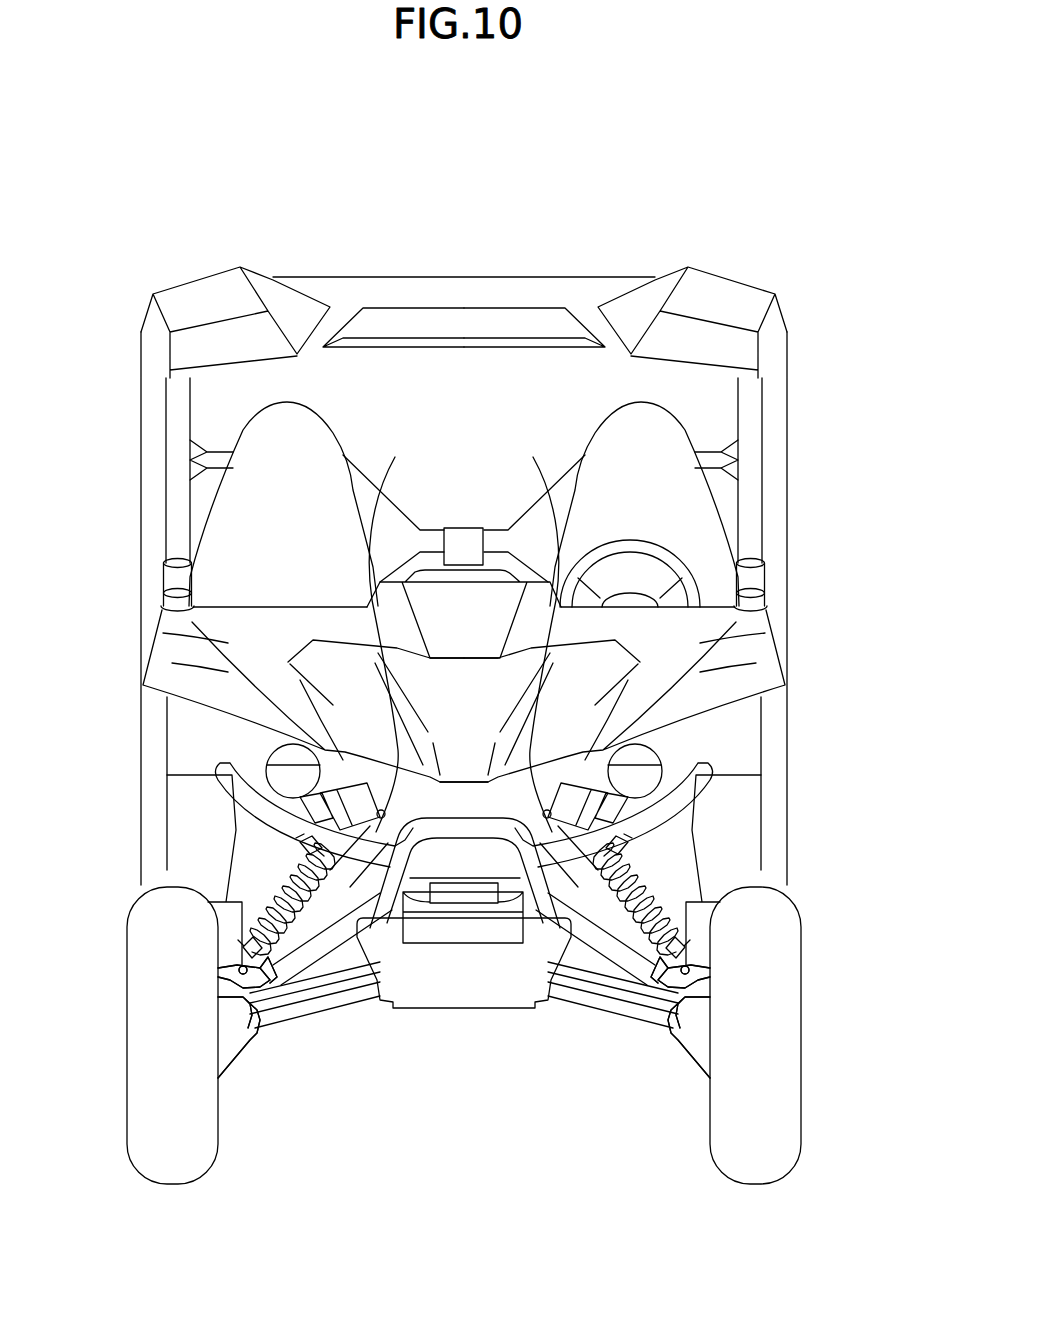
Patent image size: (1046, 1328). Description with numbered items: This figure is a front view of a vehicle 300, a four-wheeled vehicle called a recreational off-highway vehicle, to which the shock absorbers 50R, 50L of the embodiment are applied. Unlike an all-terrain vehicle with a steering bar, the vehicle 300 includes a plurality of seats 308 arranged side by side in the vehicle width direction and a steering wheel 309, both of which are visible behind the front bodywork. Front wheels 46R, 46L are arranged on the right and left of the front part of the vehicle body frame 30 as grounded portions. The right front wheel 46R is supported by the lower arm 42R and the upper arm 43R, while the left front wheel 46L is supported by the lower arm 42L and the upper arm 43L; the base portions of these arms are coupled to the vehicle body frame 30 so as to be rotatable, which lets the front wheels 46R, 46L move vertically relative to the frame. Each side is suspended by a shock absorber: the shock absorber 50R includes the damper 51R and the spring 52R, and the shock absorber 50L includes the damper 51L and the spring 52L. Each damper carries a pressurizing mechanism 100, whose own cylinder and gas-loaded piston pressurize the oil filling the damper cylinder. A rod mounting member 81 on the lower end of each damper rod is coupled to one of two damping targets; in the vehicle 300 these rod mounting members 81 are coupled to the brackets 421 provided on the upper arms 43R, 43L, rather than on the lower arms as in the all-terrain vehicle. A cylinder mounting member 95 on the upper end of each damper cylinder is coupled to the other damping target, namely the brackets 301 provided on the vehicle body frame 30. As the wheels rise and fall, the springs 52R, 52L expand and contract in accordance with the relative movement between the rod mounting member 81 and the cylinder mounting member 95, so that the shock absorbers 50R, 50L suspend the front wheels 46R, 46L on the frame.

The vehicle 300 is at (185, 196).
The seats 308 is at (322, 440).
The brackets 301 is at (397, 454).
The steering wheel 309 is at (656, 545).
The cylinder mounting member 95 is at (325, 710).
The damper 51R is at (288, 760).
The damper 51L is at (640, 760).
The pressurizing mechanism 100 is at (222, 772).
The shock absorber 50R is at (262, 848).
The shock absorber 50L is at (666, 848).
The spring 52R is at (290, 892).
The spring 52L is at (638, 892).
The rod mounting member 81 is at (317, 1003).
The upper arm 43R is at (333, 937).
The upper arm 43L is at (595, 937).
The vehicle body frame 30 is at (467, 993).
The brackets 421 is at (283, 992).
The lower arm 42R is at (316, 1010).
The lower arm 42L is at (612, 1010).
The front wheel 46R is at (182, 1163).
The front wheel 46L is at (756, 1163).